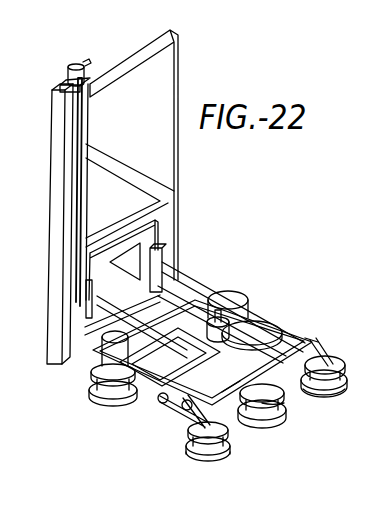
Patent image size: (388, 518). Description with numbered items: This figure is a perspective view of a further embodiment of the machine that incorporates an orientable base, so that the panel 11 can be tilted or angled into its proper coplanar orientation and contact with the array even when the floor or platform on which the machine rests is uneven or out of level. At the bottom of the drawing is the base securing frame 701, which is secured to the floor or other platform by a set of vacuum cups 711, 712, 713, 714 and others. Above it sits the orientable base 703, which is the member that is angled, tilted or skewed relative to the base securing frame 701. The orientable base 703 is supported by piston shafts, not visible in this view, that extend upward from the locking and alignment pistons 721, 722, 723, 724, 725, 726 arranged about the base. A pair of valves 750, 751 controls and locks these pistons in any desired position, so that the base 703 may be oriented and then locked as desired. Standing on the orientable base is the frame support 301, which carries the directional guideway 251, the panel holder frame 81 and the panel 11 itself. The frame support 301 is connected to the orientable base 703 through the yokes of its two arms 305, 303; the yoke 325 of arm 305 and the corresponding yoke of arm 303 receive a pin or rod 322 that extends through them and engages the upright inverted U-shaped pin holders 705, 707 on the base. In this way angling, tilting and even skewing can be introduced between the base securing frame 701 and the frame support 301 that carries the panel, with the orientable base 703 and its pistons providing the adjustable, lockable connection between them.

The panel 11 is at (108, 62).
The panel holder frame 81 is at (112, 155).
The directional guideway 251 is at (156, 238).
The frame support 301 is at (160, 246).
The arm 303 is at (195, 283).
The arm 305 is at (100, 350).
The pin or rod 322 is at (183, 407).
The yoke 325 is at (206, 452).
The base securing frame 701 is at (343, 388).
The orientable base 703 is at (240, 303).
The upright inverted U-shaped pin holder 705 is at (332, 367).
The upright inverted U-shaped pin holder 707 is at (233, 388).
The vacuum cup 711 is at (95, 407).
The vacuum cup 712 is at (205, 458).
The vacuum cup 713 is at (284, 420).
The vacuum cup 714 is at (337, 393).
The locking and alignment piston 721 is at (95, 373).
The locking and alignment piston 722 is at (228, 427).
The locking and alignment piston 723 is at (313, 336).
The locking and alignment piston 724 is at (312, 335).
The locking and alignment piston 725 is at (223, 307).
The locking and alignment piston 726 is at (200, 283).
The valve 750 is at (241, 334).
The valve 751 is at (175, 367).